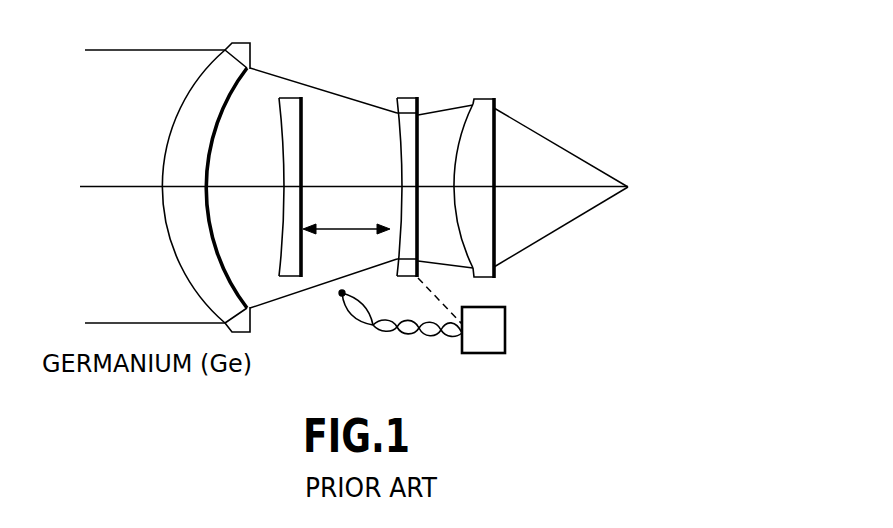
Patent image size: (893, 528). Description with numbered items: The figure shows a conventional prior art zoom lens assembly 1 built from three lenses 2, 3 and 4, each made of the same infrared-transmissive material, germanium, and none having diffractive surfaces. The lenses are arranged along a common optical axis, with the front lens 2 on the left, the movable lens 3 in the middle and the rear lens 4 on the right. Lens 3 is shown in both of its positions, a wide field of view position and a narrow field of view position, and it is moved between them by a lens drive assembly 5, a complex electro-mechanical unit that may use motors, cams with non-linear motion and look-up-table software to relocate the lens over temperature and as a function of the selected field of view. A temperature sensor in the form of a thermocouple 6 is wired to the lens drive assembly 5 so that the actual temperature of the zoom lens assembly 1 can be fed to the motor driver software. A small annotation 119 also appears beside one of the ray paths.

The zoom lens assembly 1 is at (399, 186).
The lens 2 is at (238, 42).
The lens 3 is at (397, 153).
The lens 4 is at (485, 98).
The lens drive assembly 5 is at (505, 323).
The thermocouple 6 is at (342, 293).
The ray annotation 119 is at (351, 105).